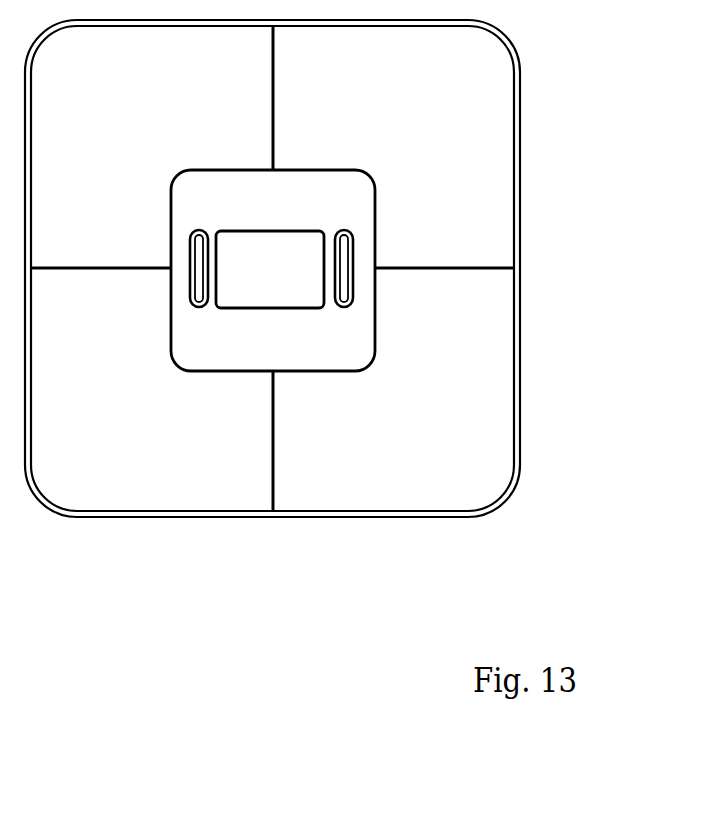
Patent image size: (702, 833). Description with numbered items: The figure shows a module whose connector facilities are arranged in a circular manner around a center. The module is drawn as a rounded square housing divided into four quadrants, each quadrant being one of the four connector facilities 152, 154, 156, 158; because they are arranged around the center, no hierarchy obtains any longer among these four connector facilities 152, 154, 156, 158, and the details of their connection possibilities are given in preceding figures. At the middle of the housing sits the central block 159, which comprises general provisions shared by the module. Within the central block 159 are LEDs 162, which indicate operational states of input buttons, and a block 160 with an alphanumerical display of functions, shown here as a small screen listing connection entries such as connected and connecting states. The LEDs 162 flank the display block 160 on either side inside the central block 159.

The connector facility 152 is at (352, 98).
The connector facility 154 is at (409, 367).
The connector facility 156 is at (195, 441).
The connector facility 158 is at (127, 168).
The central block 159 is at (370, 247).
The block with alphanumerical display 160 is at (300, 230).
The LEDs 162 is at (340, 307).